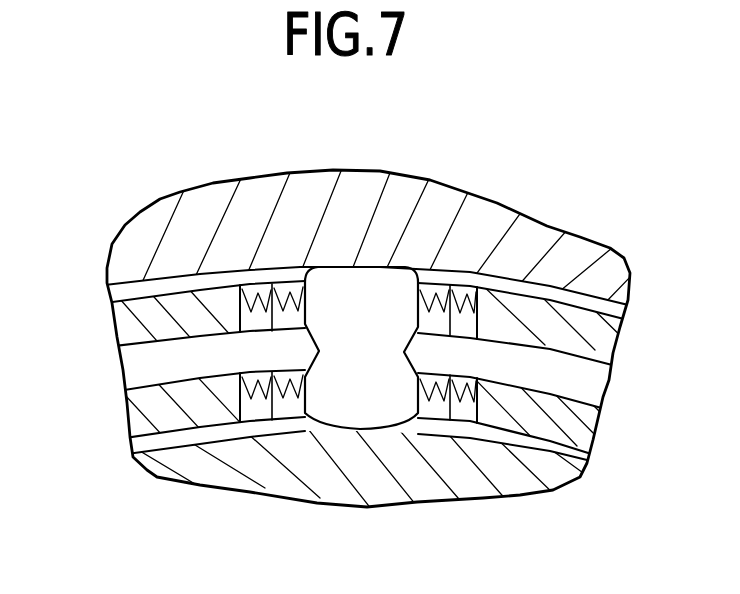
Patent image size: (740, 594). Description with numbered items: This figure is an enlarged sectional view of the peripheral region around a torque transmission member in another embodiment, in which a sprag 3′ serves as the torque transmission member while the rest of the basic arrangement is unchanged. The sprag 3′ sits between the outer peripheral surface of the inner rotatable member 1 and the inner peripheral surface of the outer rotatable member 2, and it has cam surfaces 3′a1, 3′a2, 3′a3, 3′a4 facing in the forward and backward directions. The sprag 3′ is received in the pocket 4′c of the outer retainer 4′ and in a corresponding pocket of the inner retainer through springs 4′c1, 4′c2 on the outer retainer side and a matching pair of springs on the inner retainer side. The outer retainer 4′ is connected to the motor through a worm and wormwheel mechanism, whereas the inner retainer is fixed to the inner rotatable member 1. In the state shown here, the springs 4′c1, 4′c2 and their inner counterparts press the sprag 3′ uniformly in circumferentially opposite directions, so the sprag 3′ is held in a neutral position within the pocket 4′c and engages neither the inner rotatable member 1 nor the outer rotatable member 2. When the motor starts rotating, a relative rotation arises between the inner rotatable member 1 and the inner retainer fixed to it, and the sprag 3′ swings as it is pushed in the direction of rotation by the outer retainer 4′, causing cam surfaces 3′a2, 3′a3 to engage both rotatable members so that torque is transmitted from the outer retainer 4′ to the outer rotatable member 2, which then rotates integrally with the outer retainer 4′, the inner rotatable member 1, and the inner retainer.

The inner rotatable member 1 is at (150, 469).
The outer rotatable member 2 is at (155, 233).
The sprag 3′ is at (377, 290).
The cam surface 3′a1 is at (308, 270).
The cam surface 3′a2 is at (422, 282).
The cam surface 3′a3 is at (308, 425).
The cam surface 3′a4 is at (420, 428).
The outer retainer 4′ is at (123, 330).
The pocket 4′c is at (472, 340).
The spring 4′c1 is at (252, 290).
The spring 4′c2 is at (478, 346).